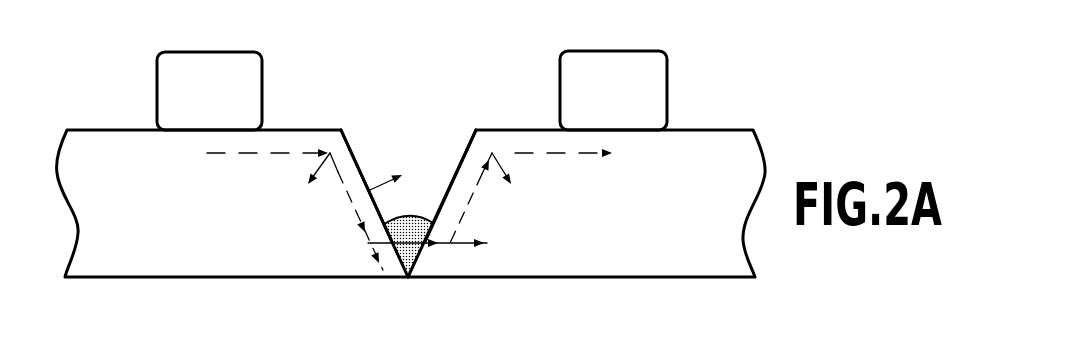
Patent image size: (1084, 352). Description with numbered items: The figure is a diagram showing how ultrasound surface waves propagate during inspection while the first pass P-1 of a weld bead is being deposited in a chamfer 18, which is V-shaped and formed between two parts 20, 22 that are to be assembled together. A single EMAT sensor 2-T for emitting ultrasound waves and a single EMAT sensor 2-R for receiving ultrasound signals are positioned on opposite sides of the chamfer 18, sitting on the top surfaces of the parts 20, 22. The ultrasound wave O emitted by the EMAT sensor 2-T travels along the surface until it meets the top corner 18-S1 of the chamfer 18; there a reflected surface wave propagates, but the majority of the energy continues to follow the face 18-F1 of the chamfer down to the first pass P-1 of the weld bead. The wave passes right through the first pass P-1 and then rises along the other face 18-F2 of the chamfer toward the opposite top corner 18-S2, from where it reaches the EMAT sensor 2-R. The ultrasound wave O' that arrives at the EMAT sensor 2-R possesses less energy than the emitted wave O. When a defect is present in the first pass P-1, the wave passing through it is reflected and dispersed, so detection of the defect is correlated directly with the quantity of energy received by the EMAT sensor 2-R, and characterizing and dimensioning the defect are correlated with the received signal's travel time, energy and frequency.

The part 20 is at (118, 152).
The part 22 is at (703, 150).
The chamfer 18 is at (371, 200).
The top corner of the chamfer 18-S1 is at (345, 128).
The opposite top corner of the chamfer 18-S2 is at (478, 128).
The face of the chamfer 18-F1 is at (364, 168).
The other face of the chamfer 18-F2 is at (448, 197).
The first pass of the weld bead P-1 is at (407, 278).
The EMAT sensor for emitting ultrasound waves 2-T is at (206, 51).
The EMAT sensor for receiving ultrasound signals 2-R is at (612, 50).
The ultrasound wave O is at (293, 209).
The ultrasound wave O' is at (536, 196).